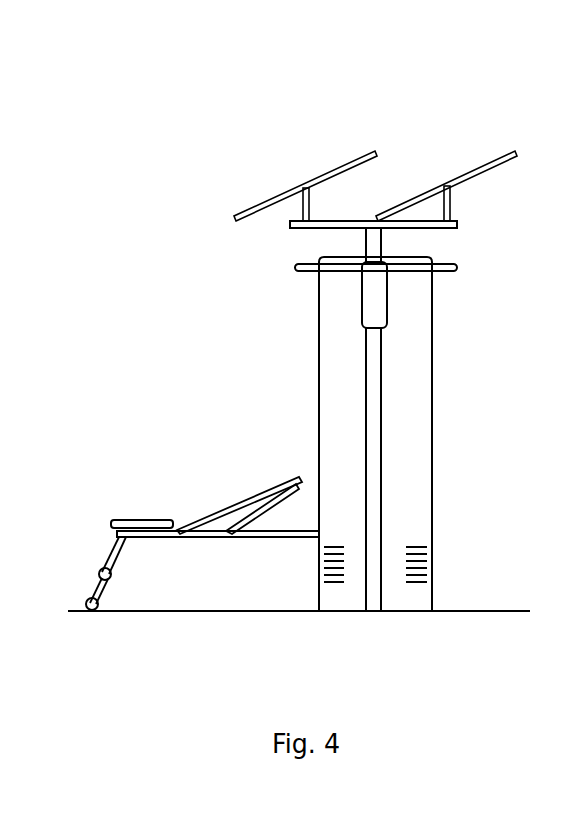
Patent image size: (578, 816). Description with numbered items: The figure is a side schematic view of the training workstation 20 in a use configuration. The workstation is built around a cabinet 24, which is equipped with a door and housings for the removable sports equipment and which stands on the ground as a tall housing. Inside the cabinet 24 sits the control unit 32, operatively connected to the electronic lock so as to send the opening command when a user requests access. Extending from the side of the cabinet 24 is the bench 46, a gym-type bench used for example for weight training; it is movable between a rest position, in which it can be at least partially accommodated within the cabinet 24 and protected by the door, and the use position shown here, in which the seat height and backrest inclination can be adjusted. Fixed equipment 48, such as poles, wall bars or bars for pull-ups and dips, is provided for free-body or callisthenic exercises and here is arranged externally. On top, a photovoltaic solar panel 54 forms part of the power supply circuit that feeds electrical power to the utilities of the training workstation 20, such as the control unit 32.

The training workstation 20 is at (251, 101).
The photovoltaic solar panel 54 is at (462, 168).
The fixed equipment 48 is at (308, 268).
The cabinet 24 is at (436, 473).
The control unit 32 is at (332, 564).
The bench 46 is at (157, 518).